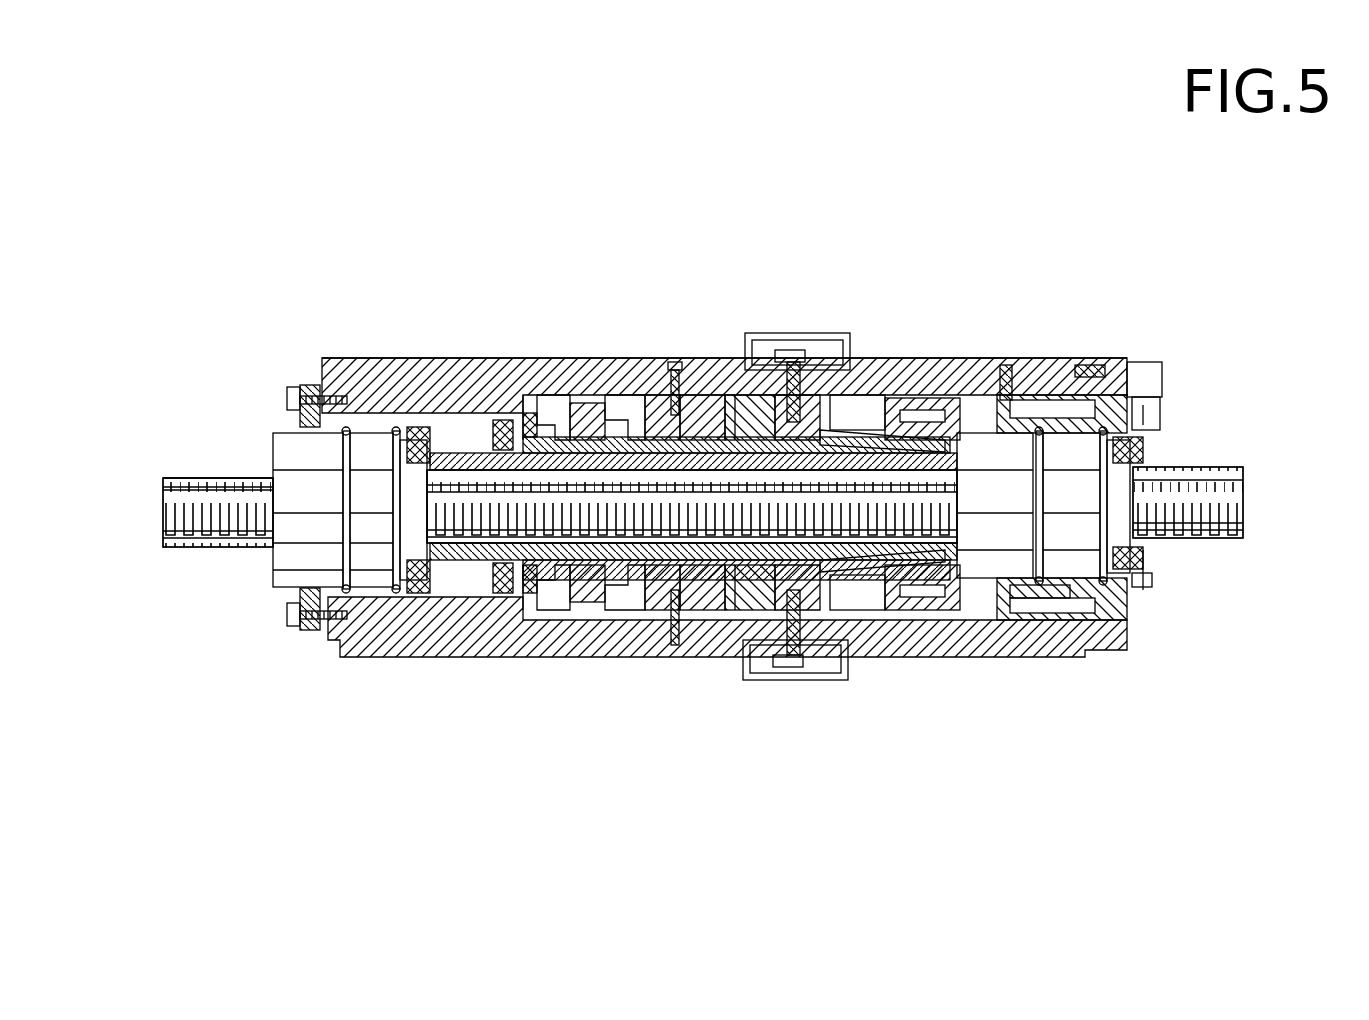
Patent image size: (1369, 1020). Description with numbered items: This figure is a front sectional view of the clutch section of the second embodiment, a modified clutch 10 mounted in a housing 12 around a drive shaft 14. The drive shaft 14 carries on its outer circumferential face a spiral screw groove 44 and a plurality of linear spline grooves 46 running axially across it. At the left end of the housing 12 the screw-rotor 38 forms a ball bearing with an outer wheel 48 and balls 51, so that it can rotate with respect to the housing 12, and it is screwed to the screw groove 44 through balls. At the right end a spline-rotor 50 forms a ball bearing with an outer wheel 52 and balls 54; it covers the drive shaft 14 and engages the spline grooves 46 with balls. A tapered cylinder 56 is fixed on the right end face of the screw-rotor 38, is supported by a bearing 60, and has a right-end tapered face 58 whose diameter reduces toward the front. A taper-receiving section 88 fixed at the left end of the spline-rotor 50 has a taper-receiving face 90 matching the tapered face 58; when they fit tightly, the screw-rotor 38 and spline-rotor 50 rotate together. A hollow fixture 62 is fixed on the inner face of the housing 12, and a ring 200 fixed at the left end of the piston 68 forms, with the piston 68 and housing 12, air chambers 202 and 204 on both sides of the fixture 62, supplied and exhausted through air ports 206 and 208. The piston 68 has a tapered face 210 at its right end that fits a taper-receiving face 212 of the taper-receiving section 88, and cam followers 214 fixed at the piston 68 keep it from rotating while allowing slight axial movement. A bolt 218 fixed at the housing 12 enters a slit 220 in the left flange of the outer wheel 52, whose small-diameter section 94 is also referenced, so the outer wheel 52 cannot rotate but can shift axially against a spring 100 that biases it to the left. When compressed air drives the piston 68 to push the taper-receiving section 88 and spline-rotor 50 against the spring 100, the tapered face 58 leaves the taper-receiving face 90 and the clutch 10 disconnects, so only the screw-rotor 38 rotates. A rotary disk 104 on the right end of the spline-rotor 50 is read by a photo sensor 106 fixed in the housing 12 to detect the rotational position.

The clutch 10 is at (432, 356).
The housing 12 is at (353, 658).
The drive shaft 14 is at (1245, 468).
The screw-rotor 38 is at (270, 590).
The screw groove 44 is at (187, 548).
The spline grooves 46 is at (185, 476).
The outer wheel 48 is at (350, 360).
The spline-rotor 50 is at (992, 568).
The balls 51 is at (400, 360).
The outer wheel 52 is at (1127, 370).
The balls 54 is at (1070, 357).
The tapered cylinder 56 is at (433, 614).
The tapered face 58 is at (927, 355).
The bearing 60 is at (517, 360).
The fixture 62 is at (608, 658).
The piston 68 is at (717, 658).
The taper-receiving section 88 is at (888, 357).
The taper-receiving face 90 is at (897, 658).
The small-diameter section 94 is at (1067, 585).
The spring 100 is at (1077, 584).
The rotary disk 104 is at (1147, 577).
The photo sensor 106 is at (1167, 392).
The ring 200 is at (518, 660).
The air chamber 202 is at (687, 658).
The air chamber 204 is at (540, 658).
The air port 206 is at (735, 357).
The air port 208 is at (622, 363).
The tapered face 210 is at (862, 355).
The taper-receiving face 212 is at (860, 658).
The cam followers 214 is at (778, 353).
The bolt 218 is at (1013, 357).
The slit 220 is at (982, 357).